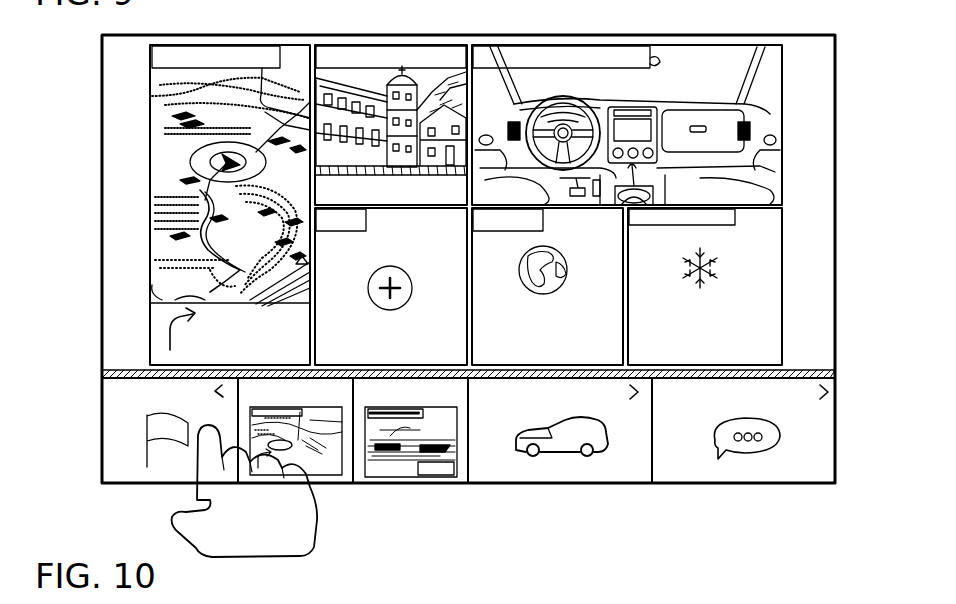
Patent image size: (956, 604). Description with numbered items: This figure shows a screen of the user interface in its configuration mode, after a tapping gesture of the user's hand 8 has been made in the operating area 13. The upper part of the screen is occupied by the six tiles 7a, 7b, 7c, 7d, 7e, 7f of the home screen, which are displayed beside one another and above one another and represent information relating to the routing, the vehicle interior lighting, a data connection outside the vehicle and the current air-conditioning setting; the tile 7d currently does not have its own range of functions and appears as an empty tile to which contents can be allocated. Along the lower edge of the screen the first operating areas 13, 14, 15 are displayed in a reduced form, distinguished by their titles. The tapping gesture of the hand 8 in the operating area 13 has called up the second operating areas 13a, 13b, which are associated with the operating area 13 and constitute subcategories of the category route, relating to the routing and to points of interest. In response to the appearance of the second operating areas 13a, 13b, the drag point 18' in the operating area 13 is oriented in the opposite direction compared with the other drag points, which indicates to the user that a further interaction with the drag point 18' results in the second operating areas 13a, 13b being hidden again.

The tile 7a is at (292, 62).
The tile 7b is at (410, 85).
The tile 7c is at (683, 87).
The tile 7d is at (433, 361).
The tile 7e is at (599, 360).
The tile 7f is at (748, 361).
The hand 8 is at (245, 491).
The first operating area 13 is at (117, 468).
The second operating area 13a is at (348, 468).
The second operating area 13b is at (462, 468).
The first operating area 14 is at (625, 468).
The first operating area 15 is at (768, 468).
The drag point 18' is at (180, 455).